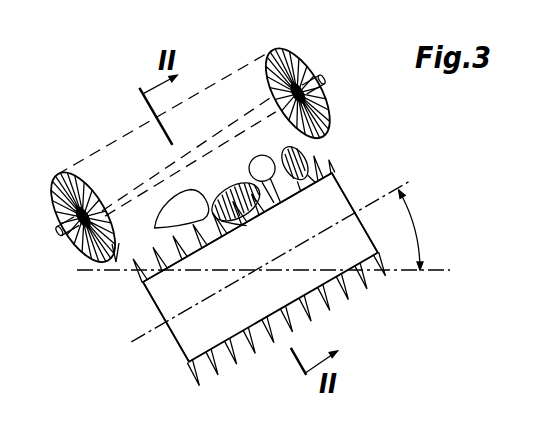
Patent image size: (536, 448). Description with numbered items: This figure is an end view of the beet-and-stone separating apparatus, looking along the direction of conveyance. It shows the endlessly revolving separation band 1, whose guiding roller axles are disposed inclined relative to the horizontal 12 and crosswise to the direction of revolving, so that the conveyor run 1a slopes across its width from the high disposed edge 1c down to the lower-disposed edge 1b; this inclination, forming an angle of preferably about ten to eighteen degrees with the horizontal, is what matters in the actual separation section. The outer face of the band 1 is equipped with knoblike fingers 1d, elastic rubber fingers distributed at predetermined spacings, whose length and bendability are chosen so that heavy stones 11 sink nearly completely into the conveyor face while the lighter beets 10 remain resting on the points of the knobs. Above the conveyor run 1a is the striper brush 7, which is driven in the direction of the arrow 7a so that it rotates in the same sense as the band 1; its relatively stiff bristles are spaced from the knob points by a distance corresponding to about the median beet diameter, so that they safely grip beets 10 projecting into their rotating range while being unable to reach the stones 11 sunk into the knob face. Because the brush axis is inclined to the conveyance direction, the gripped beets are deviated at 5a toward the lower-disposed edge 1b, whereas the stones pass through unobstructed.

The separation band 1 is at (172, 372).
The conveyor run 1a is at (209, 250).
The lower-disposed edge 1b is at (143, 286).
The high disposed edge 1c is at (355, 198).
The knoblike fingers 1d is at (366, 280).
The deviation of beets 5a is at (110, 283).
The striper brush 7 is at (288, 55).
The arrow indicating drive direction of brush 7a is at (252, 73).
The beets 10 is at (178, 206).
The stones 11 is at (257, 216).
The horizontal 12 is at (448, 272).